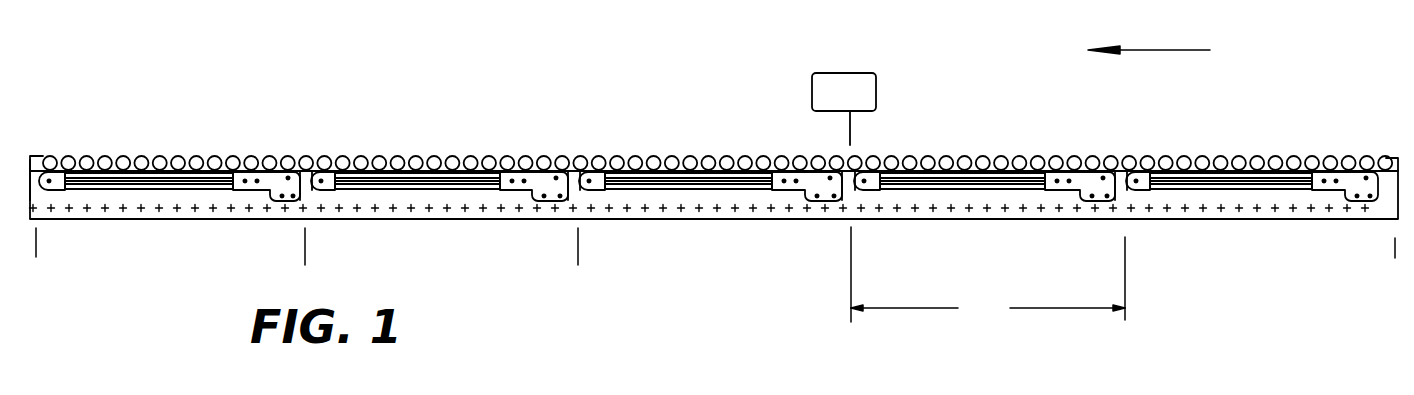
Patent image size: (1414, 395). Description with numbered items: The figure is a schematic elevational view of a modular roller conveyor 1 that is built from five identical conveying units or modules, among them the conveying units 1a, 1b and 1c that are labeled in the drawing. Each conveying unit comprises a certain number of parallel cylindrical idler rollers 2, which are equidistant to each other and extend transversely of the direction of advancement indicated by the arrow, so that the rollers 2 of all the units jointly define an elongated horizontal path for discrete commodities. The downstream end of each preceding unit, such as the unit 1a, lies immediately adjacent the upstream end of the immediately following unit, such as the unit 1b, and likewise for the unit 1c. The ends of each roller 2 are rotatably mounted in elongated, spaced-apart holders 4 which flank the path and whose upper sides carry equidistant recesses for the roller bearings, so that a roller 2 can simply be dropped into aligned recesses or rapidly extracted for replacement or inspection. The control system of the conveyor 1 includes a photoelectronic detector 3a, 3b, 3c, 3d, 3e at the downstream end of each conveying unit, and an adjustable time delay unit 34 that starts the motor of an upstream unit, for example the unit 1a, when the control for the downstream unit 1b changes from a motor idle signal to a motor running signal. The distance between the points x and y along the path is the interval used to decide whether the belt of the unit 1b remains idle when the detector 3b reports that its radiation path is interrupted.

The modular roller conveyor 1 is at (648, 138).
The idler rollers 2 is at (143, 150).
The photoelectronic detector 3a is at (1127, 150).
The photoelectronic detector 3b is at (852, 146).
The photoelectronic detector 3c is at (581, 147).
The photoelectronic detector 3d is at (312, 148).
The photoelectronic detector 3e is at (45, 138).
The time delay unit 34 is at (822, 90).
The holder 4 is at (503, 225).
The conveying unit 1a is at (305, 249).
The conveying unit 1b is at (578, 249).
The conveying unit 1c is at (851, 249).